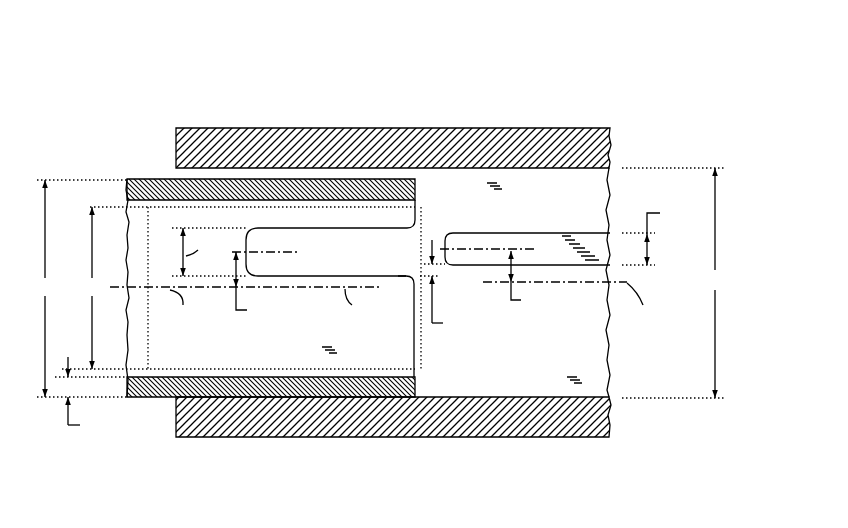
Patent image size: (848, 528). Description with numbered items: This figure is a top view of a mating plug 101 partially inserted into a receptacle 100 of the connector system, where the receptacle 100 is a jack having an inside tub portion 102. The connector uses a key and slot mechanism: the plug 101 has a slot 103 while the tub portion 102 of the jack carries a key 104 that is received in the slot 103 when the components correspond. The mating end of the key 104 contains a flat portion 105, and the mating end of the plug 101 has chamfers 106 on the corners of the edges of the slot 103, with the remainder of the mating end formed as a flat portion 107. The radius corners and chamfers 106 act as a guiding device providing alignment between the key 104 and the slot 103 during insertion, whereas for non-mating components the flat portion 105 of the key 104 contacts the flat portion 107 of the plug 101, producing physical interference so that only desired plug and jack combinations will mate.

The receptacle 100 is at (638, 89).
The plug 101 is at (141, 167).
The tub portion 102 is at (514, 125).
The slot 103 is at (343, 260).
The key 104 is at (555, 233).
The flat portion 105 is at (444, 246).
The chamfers 106 is at (412, 273).
The flat portion 107 is at (417, 340).